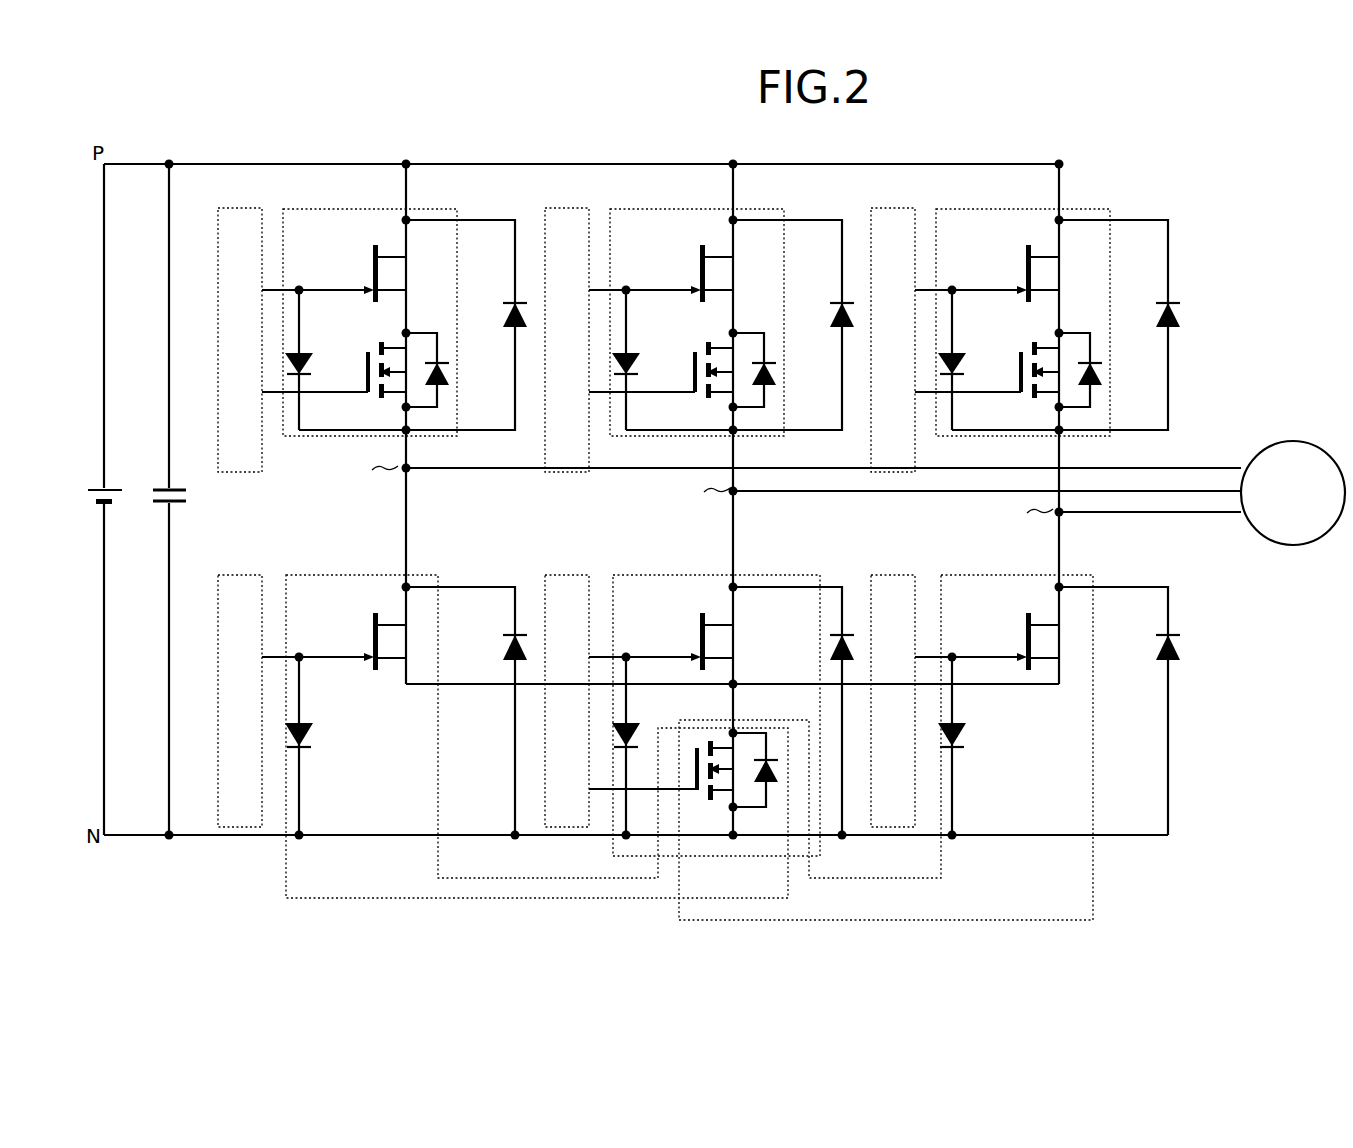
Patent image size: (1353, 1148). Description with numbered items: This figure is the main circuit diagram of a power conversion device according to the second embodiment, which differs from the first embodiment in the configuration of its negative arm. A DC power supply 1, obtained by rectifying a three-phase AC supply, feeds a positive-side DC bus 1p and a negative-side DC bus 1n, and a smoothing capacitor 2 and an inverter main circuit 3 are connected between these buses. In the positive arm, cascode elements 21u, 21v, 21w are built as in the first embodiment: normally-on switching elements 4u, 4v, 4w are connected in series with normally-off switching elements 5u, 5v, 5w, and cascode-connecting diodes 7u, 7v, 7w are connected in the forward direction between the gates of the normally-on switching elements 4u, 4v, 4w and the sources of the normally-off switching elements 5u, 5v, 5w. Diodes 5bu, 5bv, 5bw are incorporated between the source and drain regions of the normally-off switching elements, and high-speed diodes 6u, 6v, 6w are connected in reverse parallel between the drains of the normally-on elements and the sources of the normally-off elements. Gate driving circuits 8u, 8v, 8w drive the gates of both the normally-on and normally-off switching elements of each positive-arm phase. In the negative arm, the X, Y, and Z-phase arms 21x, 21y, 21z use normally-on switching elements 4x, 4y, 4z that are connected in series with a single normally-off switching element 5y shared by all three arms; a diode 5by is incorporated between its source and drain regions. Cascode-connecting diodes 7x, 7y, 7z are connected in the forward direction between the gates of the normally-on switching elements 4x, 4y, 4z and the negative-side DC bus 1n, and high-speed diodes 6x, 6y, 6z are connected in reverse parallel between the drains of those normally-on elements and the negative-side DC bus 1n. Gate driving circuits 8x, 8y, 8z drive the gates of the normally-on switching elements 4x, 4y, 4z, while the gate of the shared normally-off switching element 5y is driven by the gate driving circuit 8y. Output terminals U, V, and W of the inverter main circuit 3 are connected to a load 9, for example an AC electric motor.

The DC power supply 1 is at (96, 488).
The positive-side DC bus 1p is at (200, 162).
The negative-side DC bus 1n is at (180, 838).
The smoothing capacitor 2 is at (162, 488).
The inverter main circuit 3 is at (640, 153).
The load 9 is at (1305, 441).
The gate driving circuit 8u is at (233, 208).
The gate driving circuit 8v is at (568, 322).
The gate driving circuit 8w is at (896, 322).
The gate driving circuit 8x is at (233, 575).
The gate driving circuit 8y is at (568, 684).
The gate driving circuit 8z is at (893, 684).
The cascode element 21u is at (416, 209).
The cascode element 21v is at (702, 304).
The cascode element 21w is at (1030, 304).
The cascode element 21x is at (416, 575).
The cascode element 21y is at (716, 698).
The cascode element 21z is at (899, 730).
The normally-on switching element 4u is at (364, 276).
The normally-on switching element 4v is at (661, 269).
The normally-on switching element 4w is at (987, 269).
The normally-on switching element 4x is at (364, 646).
The normally-on switching element 4y is at (661, 638).
The normally-on switching element 4z is at (987, 638).
The normally-off switching element 5u is at (364, 352).
The normally-off switching element 5v is at (661, 354).
The normally-off switching element 5w is at (987, 354).
The normally-off switching element 5y is at (661, 748).
The diode 5bu is at (449, 379).
The diode 5bv is at (781, 370).
The diode 5bw is at (1110, 370).
The diode 5by is at (759, 784).
The high-speed diode 6u is at (502, 324).
The high-speed diode 6v is at (822, 307).
The high-speed diode 6w is at (1148, 307).
The high-speed diode 6x is at (502, 656).
The high-speed diode 6y is at (822, 639).
The high-speed diode 6z is at (1148, 639).
The cascode-connecting diode 7u is at (311, 362).
The cascode-connecting diode 7v is at (672, 360).
The cascode-connecting diode 7w is at (998, 360).
The cascode-connecting diode 7x is at (311, 742).
The cascode-connecting diode 7y is at (642, 748).
The cascode-connecting diode 7z is at (970, 748).